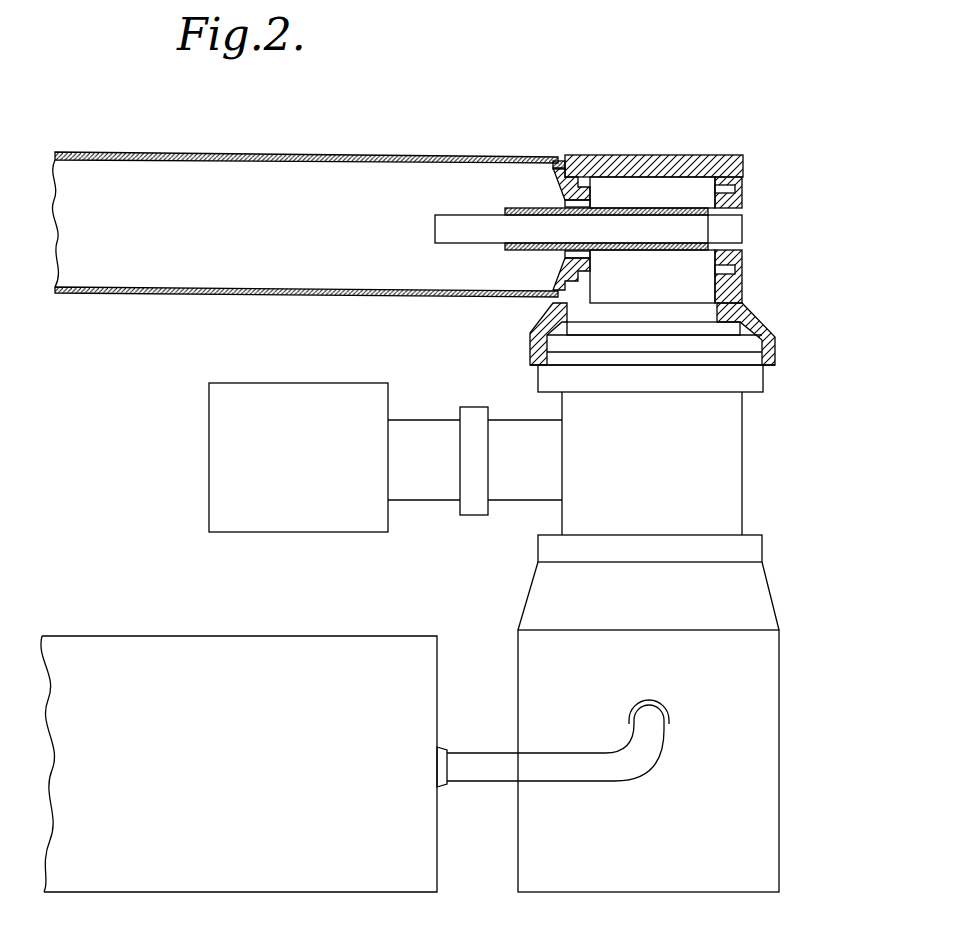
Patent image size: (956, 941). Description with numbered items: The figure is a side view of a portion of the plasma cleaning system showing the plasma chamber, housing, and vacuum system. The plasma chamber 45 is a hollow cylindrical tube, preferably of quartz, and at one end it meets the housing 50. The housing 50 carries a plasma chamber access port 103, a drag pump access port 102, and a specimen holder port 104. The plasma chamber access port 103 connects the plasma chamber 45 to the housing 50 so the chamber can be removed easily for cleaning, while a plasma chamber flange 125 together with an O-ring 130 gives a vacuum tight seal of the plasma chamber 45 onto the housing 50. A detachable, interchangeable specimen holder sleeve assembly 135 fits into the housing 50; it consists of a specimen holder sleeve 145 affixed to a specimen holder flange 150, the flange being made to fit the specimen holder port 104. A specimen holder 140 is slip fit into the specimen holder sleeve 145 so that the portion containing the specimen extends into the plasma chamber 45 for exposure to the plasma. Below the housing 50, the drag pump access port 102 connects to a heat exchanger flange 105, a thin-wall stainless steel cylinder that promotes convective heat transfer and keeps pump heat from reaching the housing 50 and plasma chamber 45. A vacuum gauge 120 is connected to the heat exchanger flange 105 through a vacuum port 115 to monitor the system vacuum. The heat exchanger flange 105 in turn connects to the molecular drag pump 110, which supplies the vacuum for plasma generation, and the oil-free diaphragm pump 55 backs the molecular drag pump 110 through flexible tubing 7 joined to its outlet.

The plasma chamber 45 is at (227, 152).
The plasma chamber flange 125 is at (558, 160).
The O-ring 130 is at (553, 170).
The plasma chamber access port 103 is at (592, 155).
The specimen holder sleeve assembly 135 is at (617, 208).
The specimen holder sleeve 145 is at (663, 210).
The housing 50 is at (709, 186).
The specimen holder port 104 is at (722, 190).
The specimen holder 140 is at (735, 230).
The specimen holder flange 150 is at (742, 262).
The drag pump access port 102 is at (766, 370).
The heat exchanger flange 105 is at (728, 460).
The vacuum port 115 is at (473, 410).
The vacuum gauge 120 is at (217, 431).
The diaphragm pump 55 is at (193, 643).
The molecular drag pump 110 is at (768, 735).
The flexible tubing 7 is at (638, 768).